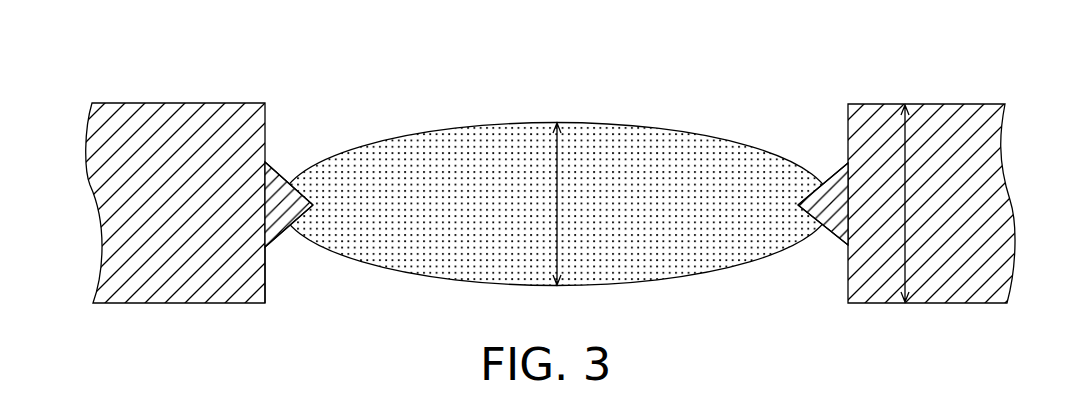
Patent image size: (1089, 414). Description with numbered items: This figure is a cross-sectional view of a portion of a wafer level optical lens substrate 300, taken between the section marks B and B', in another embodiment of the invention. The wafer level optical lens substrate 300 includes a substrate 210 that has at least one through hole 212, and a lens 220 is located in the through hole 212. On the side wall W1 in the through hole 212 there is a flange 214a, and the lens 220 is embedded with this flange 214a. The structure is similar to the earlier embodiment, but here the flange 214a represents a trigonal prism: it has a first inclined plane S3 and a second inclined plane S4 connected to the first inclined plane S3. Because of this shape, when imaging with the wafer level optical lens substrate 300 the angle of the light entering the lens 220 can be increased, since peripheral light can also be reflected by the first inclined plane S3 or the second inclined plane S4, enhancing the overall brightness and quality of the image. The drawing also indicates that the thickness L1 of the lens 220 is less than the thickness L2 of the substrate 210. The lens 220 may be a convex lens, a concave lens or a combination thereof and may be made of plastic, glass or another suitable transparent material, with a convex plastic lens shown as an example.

The substrate 210 is at (960, 130).
The through hole 212 is at (524, 118).
The flange 214a is at (282, 207).
The lens 220 is at (727, 163).
The first inclined plane S3 is at (283, 176).
The second inclined plane S4 is at (283, 237).
The side wall W1 is at (268, 269).
The thickness of the lens L1 is at (541, 204).
The thickness of the substrate L2 is at (890, 203).
The section line B is at (92, 323).
The section line B' is at (1013, 328).
The wafer level optical lens substrate 300 is at (1075, 384).